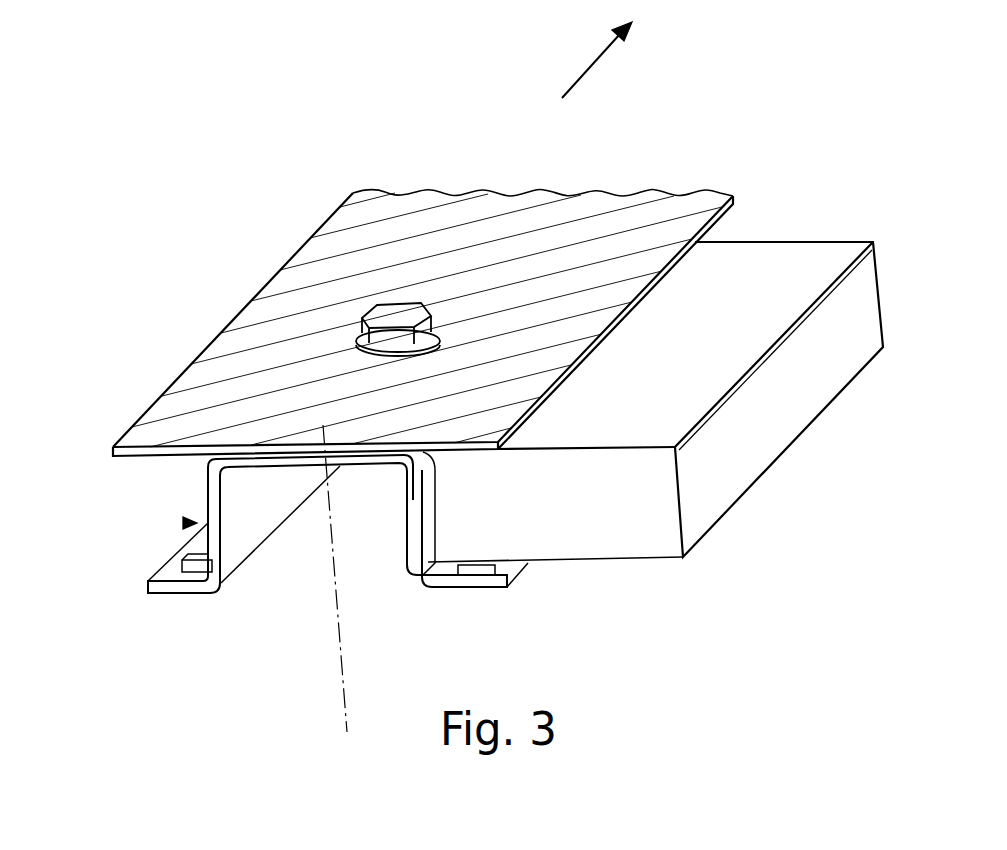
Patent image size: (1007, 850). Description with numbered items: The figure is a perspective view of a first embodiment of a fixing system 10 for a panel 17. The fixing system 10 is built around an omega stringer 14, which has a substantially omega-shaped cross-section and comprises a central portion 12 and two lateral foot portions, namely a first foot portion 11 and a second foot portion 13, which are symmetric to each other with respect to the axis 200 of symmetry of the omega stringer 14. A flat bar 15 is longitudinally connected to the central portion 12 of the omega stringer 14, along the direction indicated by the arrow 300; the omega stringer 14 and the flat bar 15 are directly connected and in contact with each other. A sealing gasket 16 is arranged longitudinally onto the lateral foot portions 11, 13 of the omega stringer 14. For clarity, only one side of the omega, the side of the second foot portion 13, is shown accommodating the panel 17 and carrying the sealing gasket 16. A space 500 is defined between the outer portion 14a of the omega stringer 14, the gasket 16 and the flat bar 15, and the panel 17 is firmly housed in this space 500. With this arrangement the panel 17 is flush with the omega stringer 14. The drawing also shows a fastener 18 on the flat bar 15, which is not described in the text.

The fixing system 10 is at (227, 163).
The first foot portion 11 is at (193, 573).
The central portion 12 is at (257, 500).
The second foot portion 13 is at (447, 590).
The omega stringer 14 is at (199, 648).
The outer portion 14a is at (210, 512).
The flat bar 15 is at (343, 237).
The sealing gasket 16 is at (185, 569).
The panel 17 is at (590, 537).
The bolt 18 is at (396, 310).
The axis of symmetry 200 is at (347, 690).
The arrow 300 is at (592, 67).
The space 500 is at (186, 523).